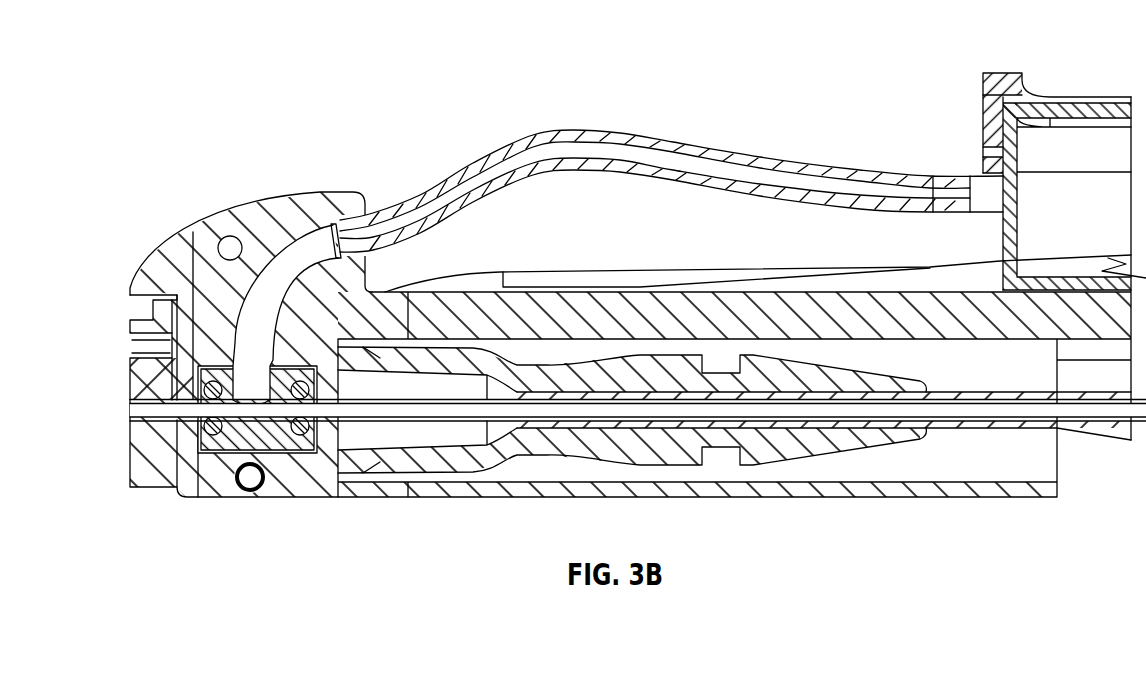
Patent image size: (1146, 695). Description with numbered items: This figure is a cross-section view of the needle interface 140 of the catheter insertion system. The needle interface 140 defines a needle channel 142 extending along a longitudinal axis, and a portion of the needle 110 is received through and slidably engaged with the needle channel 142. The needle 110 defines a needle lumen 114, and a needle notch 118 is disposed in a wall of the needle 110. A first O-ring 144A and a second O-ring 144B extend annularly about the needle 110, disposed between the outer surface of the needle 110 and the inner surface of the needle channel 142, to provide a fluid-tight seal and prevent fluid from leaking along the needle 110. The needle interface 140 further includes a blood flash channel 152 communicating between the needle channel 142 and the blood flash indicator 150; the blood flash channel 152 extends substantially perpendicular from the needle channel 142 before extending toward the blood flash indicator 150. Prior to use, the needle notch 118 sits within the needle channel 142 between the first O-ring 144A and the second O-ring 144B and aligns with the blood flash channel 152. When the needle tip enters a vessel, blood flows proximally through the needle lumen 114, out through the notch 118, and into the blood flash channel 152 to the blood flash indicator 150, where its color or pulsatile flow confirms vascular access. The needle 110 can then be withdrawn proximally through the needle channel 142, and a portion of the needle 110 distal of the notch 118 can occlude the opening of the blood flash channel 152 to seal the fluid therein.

The needle 110 is at (560, 420).
The needle lumen 114 is at (482, 408).
The needle notch 118 is at (243, 420).
The needle interface 140 is at (157, 270).
The needle channel 142 is at (267, 421).
The first O-ring 144A is at (190, 392).
The second O-ring 144B is at (303, 376).
The blood flash indicator 150 is at (1088, 95).
The blood flash channel 152 is at (288, 268).